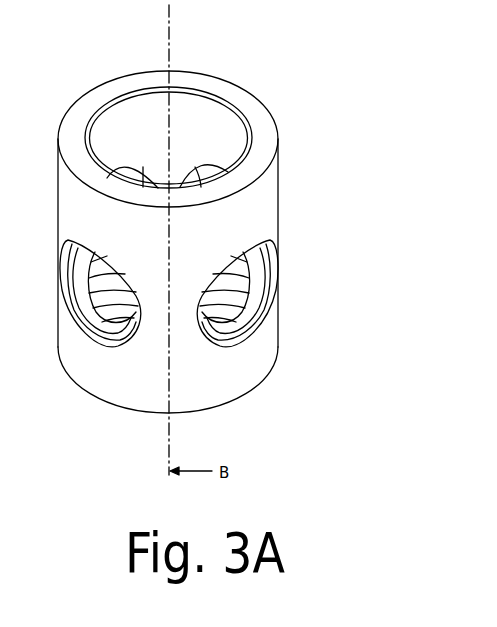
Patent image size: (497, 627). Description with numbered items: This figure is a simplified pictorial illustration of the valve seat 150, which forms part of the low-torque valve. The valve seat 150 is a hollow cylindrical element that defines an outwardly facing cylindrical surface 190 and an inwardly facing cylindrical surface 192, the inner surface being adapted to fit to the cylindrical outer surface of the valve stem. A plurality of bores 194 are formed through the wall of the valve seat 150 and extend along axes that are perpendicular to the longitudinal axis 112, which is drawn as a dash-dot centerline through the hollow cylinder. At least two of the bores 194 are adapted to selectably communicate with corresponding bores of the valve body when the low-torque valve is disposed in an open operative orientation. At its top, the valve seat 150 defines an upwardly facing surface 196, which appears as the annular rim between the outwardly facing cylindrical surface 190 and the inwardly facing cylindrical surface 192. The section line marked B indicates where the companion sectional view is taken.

The longitudinal axis 112 is at (167, 14).
The valve seat 150 is at (357, 223).
The outwardly facing cylindrical surface 190 is at (276, 197).
The inwardly facing cylindrical surface 192 is at (232, 118).
The bores 194 is at (265, 297).
The upwardly facing surface 196 is at (79, 103).